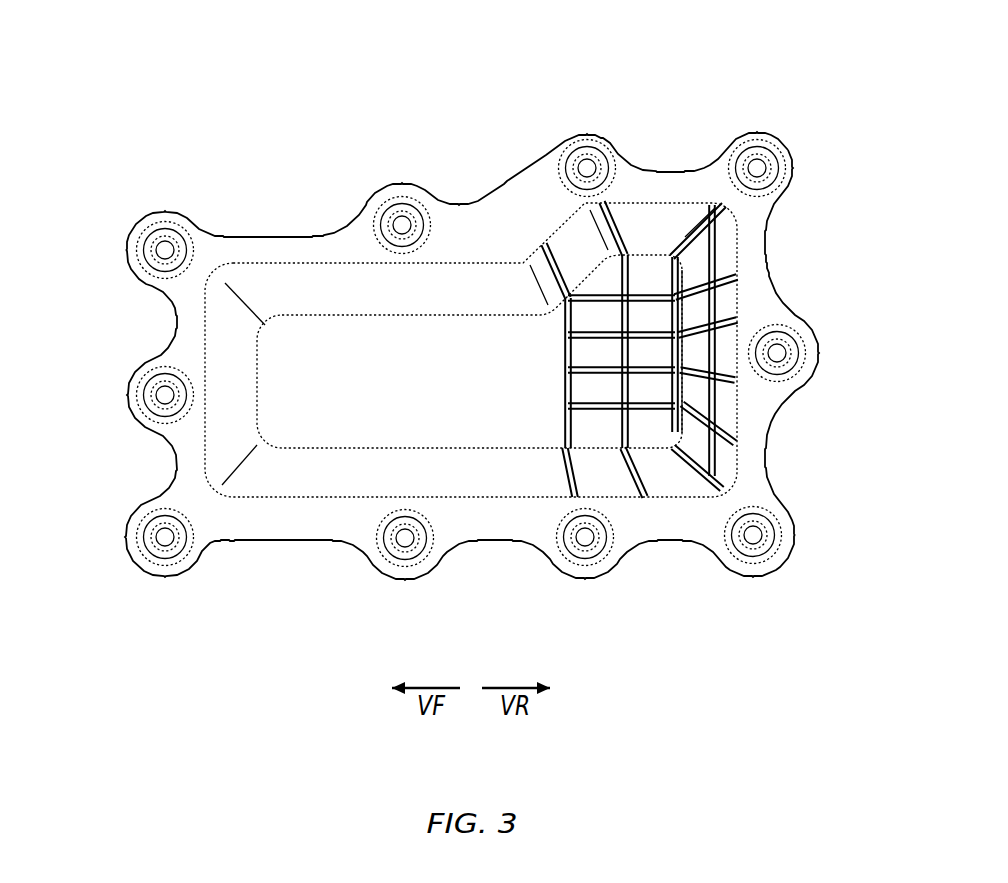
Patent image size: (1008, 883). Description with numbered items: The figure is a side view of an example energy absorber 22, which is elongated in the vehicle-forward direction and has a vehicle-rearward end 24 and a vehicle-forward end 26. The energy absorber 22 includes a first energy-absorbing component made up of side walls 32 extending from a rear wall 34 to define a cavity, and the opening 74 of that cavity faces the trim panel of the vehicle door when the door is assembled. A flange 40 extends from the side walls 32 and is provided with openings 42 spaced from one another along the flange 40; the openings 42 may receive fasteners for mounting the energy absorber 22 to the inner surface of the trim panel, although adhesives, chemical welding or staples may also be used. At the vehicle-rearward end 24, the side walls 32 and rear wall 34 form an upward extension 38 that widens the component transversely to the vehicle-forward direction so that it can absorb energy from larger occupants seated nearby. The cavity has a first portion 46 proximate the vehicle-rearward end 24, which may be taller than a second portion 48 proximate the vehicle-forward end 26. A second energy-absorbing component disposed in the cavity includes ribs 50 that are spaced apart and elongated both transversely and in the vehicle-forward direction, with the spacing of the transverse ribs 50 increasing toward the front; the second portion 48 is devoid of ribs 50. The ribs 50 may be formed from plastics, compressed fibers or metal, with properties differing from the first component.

The energy absorber 22 is at (205, 70).
The vehicle-rearward end 24 is at (820, 371).
The vehicle-forward end 26 is at (121, 396).
The side walls 32 is at (301, 285).
The rear wall 34 is at (414, 398).
The upward extension 38 is at (571, 253).
The flange 40 is at (454, 235).
The openings 42 is at (162, 246).
The first portion 46 is at (651, 388).
The second portion 48 is at (362, 356).
The ribs 50 is at (649, 285).
The opening 74 is at (260, 500).